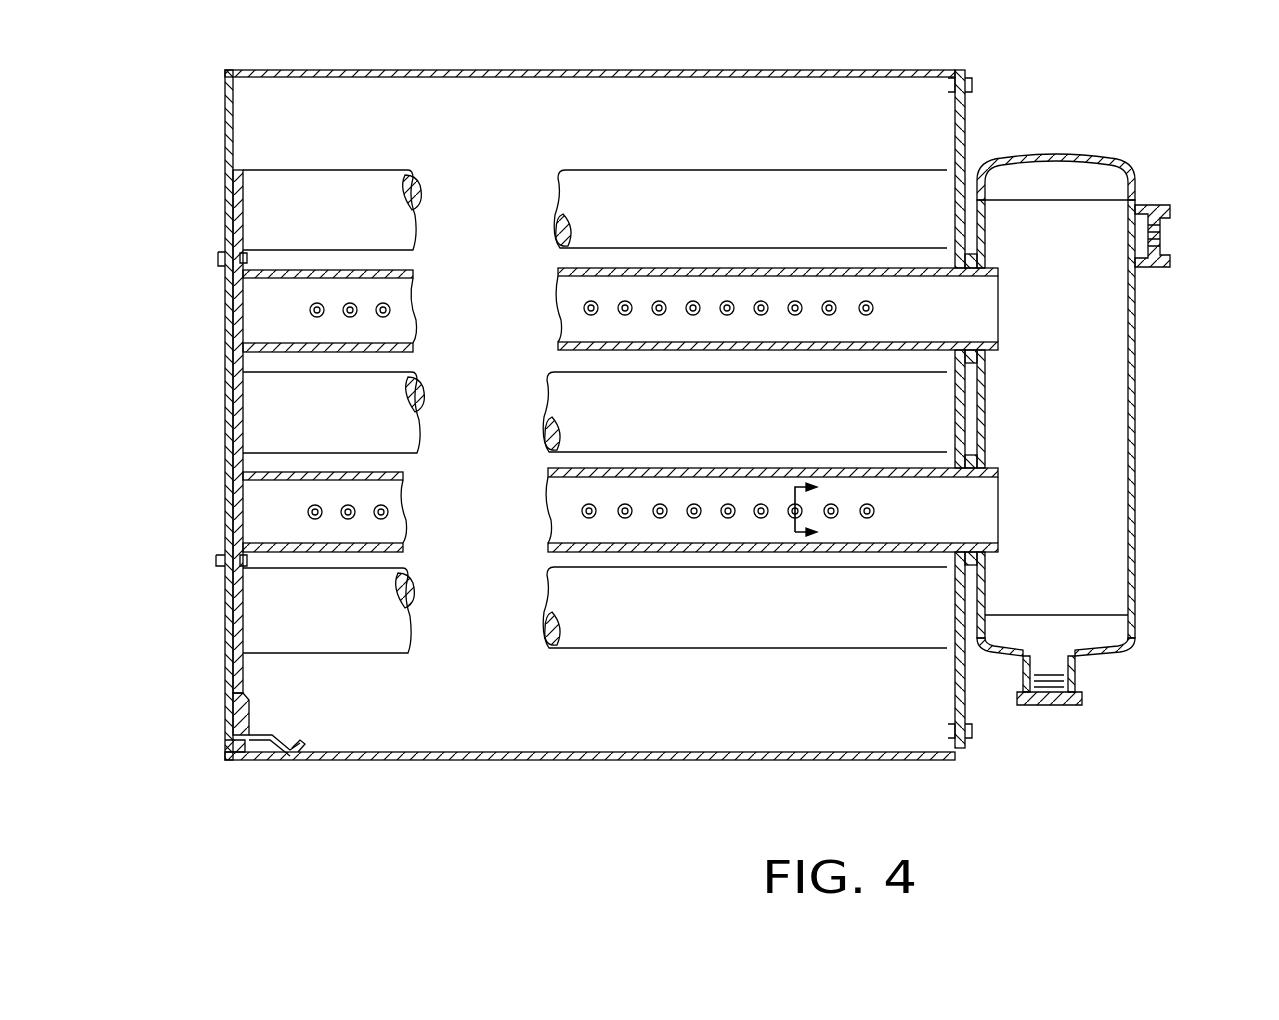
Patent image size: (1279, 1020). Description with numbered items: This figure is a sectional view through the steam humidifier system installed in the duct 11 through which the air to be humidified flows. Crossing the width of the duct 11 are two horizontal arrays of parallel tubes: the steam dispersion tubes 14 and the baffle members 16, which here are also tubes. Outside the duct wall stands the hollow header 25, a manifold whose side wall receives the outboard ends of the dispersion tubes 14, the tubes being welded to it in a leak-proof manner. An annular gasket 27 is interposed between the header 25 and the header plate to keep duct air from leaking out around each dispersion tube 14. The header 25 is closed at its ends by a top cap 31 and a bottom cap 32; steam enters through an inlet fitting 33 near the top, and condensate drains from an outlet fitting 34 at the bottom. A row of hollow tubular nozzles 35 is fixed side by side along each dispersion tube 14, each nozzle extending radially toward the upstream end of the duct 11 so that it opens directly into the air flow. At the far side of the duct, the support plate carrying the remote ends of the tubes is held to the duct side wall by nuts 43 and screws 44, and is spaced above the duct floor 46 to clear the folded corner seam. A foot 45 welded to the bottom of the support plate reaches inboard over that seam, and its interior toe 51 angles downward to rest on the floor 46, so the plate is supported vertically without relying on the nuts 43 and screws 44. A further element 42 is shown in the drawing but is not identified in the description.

The duct 11 is at (404, 766).
The steam dispersion tube 14 is at (678, 268).
The baffle member 16 is at (706, 170).
The hollow header 25 is at (1146, 398).
The annular gasket 27 is at (993, 355).
The top cap 31 is at (1118, 166).
The bottom cap 32 is at (1124, 648).
The inlet fitting 33 is at (1174, 208).
The outlet fitting 34 is at (1078, 706).
The hollow tubular nozzle 35 is at (794, 507).
The right wall clip 42 is at (966, 733).
The nut 43 is at (245, 260).
The screw 44 is at (222, 258).
The foot 45 is at (288, 730).
The duct floor 46 is at (478, 760).
The interior toe 51 is at (308, 742).